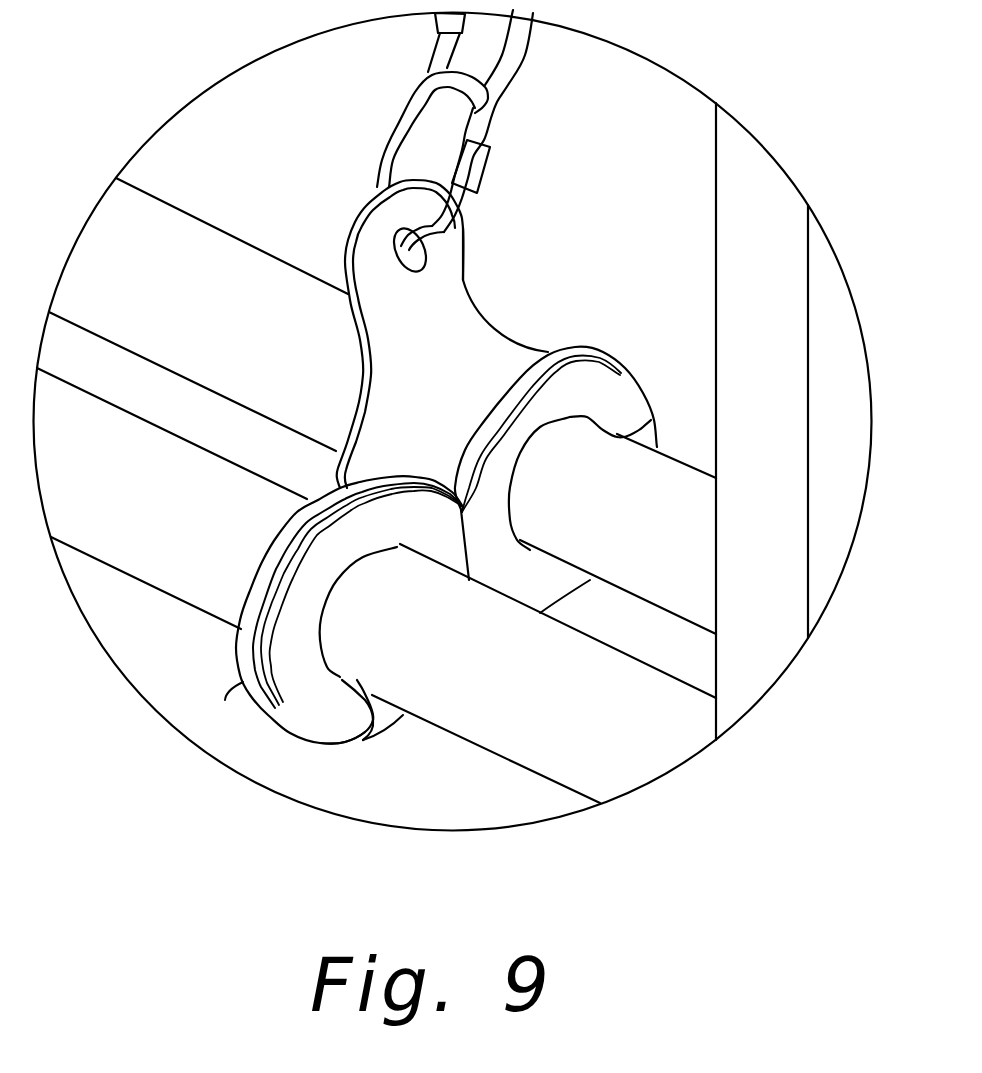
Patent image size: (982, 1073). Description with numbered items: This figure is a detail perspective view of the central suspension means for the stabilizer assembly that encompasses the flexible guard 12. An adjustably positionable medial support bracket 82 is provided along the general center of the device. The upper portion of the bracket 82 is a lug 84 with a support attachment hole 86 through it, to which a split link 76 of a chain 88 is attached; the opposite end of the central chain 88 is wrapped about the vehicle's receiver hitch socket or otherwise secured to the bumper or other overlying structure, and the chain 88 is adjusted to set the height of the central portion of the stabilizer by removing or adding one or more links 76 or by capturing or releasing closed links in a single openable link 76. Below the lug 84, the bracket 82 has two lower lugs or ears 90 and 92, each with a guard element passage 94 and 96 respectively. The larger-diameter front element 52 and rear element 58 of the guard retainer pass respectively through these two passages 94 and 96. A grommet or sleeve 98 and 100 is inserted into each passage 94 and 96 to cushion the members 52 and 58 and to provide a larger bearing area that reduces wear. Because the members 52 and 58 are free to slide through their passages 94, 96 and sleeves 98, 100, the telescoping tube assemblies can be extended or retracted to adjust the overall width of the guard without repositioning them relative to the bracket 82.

The guard 12 is at (790, 372).
The front element 52 is at (225, 333).
The rear element 58 is at (540, 714).
The split link 76 is at (509, 73).
The medial support bracket 82 is at (440, 422).
The lug 84 is at (467, 245).
The support attachment hole 86 is at (400, 247).
The chain 88 is at (371, 95).
The lower lug 90 is at (587, 347).
The lower lug 92 is at (250, 650).
The guard element passage 94 is at (645, 417).
The guard element passage 96 is at (367, 703).
The grommet or sleeve 98 is at (557, 397).
The grommet or sleeve 100 is at (296, 705).